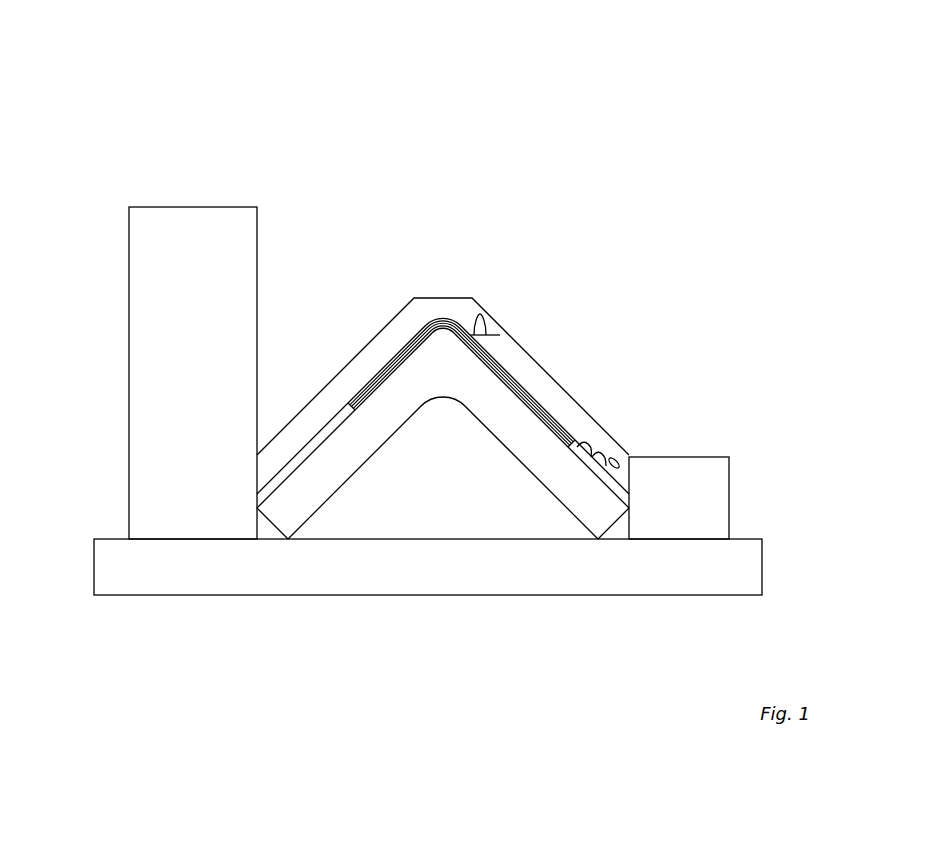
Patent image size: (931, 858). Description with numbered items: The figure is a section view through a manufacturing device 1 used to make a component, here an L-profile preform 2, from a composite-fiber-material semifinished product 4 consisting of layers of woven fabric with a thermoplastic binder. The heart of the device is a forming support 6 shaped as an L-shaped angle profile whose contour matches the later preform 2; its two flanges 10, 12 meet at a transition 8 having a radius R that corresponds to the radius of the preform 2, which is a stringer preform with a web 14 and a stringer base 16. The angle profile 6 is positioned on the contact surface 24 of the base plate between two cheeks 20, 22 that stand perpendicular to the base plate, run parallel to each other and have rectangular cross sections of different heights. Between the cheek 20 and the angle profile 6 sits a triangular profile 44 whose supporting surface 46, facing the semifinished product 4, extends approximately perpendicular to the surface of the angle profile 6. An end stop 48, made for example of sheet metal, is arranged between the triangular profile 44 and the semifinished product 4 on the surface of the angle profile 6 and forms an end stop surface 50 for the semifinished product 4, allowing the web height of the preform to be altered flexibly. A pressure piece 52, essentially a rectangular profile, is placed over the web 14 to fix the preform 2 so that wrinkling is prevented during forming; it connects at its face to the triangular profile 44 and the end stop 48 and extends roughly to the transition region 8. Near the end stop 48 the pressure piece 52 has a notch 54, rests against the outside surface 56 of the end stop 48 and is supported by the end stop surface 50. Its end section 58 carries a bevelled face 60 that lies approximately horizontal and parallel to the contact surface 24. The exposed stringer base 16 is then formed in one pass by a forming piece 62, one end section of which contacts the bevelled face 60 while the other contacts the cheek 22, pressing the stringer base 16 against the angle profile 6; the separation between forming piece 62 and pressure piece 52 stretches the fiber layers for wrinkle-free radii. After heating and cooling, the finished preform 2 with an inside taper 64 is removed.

The manufacturing device 1 is at (740, 57).
The preform 2 is at (505, 325).
The composite-fiber-material semifinished product 4 is at (406, 306).
The forming support 6 is at (380, 432).
The transition 8 is at (444, 298).
The flange 10 is at (346, 492).
The flange 12 is at (491, 458).
The web 14 is at (575, 440).
The stringer base 16 is at (385, 330).
The cheek 20 is at (718, 470).
The cheek 22 is at (183, 302).
The contact surface 24 is at (236, 539).
The triangular profile 44 is at (618, 483).
The supporting surface 46 is at (629, 457).
The end stop 48 is at (615, 461).
The end stop surface 50 is at (587, 449).
The pressure piece 52 is at (540, 387).
The notch 54 is at (601, 459).
The outside surface 56 is at (599, 462).
The end section 58 is at (485, 290).
The bevelled face 60 is at (471, 335).
The forming piece 62 is at (335, 399).
The taper 64 is at (350, 348).